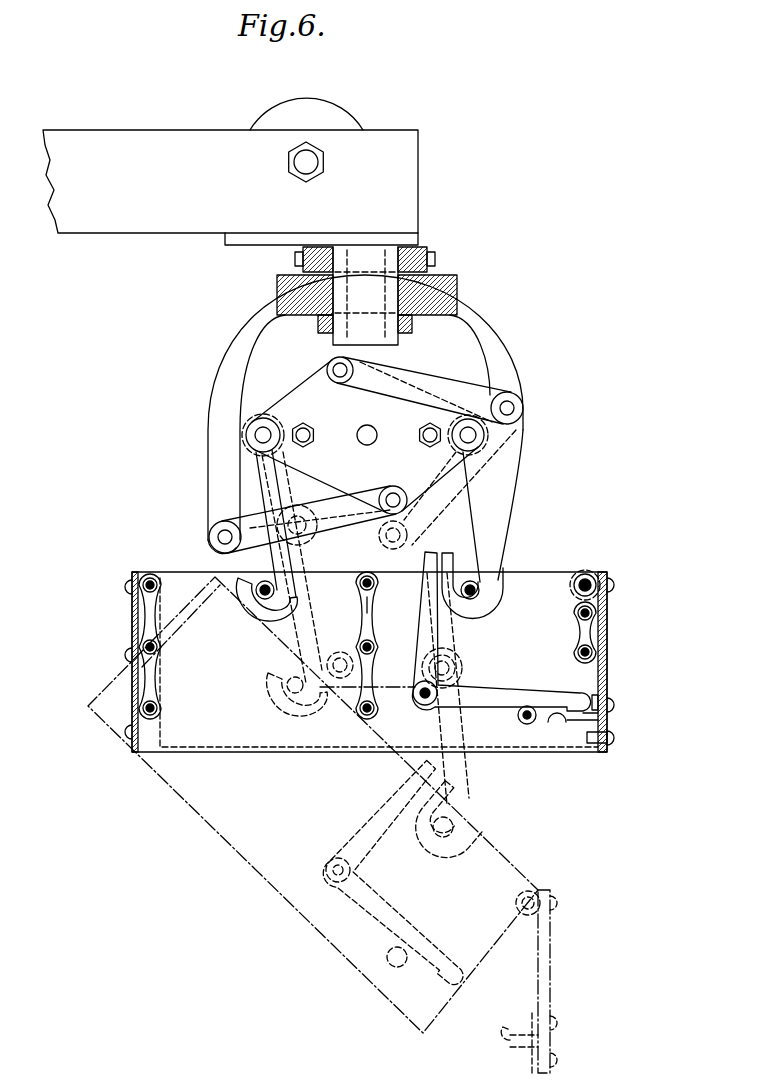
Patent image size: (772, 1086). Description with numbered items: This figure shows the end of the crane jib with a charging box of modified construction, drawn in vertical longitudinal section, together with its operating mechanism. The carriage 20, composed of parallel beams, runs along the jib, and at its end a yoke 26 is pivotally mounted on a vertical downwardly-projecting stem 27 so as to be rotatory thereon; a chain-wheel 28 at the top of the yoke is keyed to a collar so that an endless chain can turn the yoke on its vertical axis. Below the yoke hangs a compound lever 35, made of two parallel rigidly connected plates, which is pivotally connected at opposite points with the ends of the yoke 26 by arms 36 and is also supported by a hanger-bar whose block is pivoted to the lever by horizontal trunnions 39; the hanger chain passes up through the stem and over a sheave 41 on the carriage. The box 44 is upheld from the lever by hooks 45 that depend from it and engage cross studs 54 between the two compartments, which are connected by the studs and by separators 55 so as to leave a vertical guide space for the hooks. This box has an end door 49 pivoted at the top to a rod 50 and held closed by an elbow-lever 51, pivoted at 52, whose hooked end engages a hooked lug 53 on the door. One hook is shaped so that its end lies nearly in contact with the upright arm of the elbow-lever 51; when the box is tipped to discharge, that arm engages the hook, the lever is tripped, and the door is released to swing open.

The carriage 20 is at (230, 187).
The sheave 41 is at (306, 114).
The chain-wheel 28 is at (428, 252).
The stem 27 is at (367, 296).
The yoke 26 is at (365, 414).
The arms 36 is at (333, 645).
The compound lever 35 is at (468, 640).
The trunnions 39 is at (367, 435).
The hooks 45 is at (480, 797).
The cross studs 54 is at (263, 582).
The box 44 is at (192, 586).
The separators 55 is at (155, 615).
The rod 50 is at (590, 575).
The end door 49 is at (608, 672).
The elbow-lever 51 is at (454, 770).
The pivot 52 is at (425, 704).
The hooked lug 53 is at (560, 722).